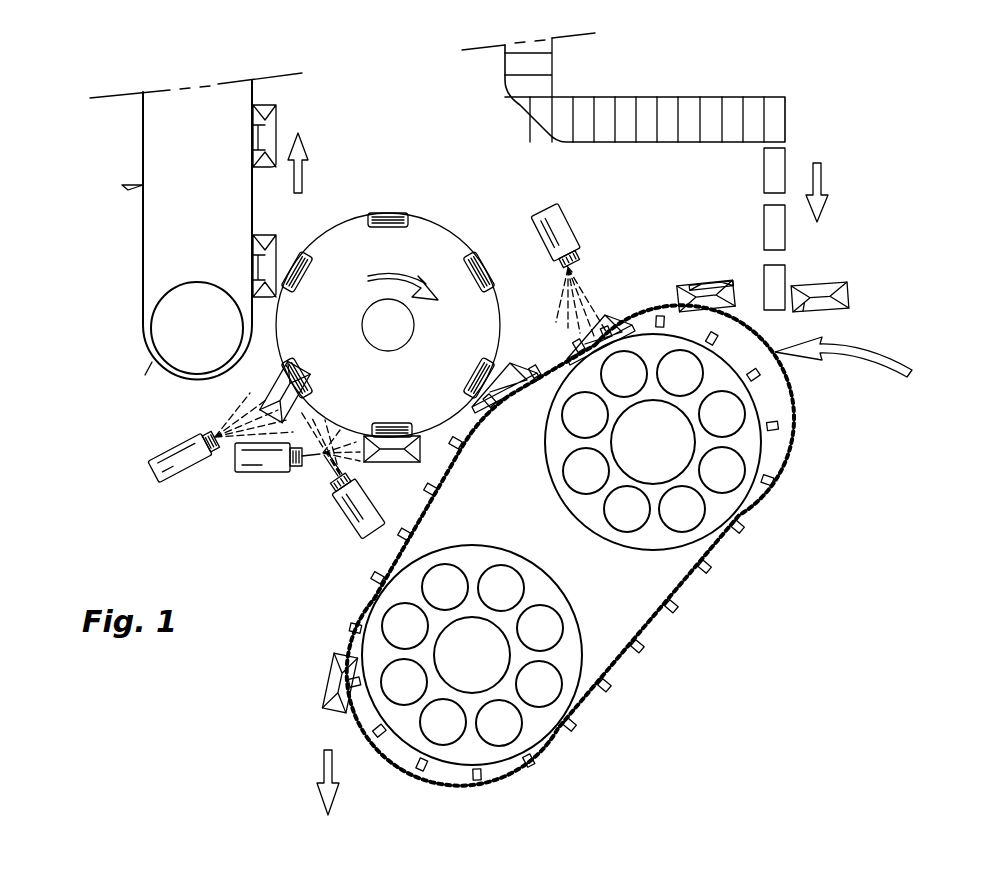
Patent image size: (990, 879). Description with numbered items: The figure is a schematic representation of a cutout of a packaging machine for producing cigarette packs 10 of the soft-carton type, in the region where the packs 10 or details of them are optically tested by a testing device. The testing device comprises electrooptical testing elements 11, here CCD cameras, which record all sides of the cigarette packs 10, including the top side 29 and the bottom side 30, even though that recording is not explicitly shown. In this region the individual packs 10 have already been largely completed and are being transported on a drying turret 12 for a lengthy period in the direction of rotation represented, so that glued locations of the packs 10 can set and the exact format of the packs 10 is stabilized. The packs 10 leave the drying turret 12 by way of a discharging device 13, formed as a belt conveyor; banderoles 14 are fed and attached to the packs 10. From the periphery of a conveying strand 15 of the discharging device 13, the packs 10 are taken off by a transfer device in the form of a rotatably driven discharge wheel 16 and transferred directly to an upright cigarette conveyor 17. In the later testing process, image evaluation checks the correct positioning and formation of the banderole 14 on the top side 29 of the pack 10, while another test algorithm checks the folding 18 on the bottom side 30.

The cigarette pack 10 is at (815, 300).
The electrooptical testing element 11 is at (560, 226).
The drying turret 12 is at (871, 449).
The discharging device 13 is at (668, 665).
The banderole 14 is at (813, 137).
The conveying strand 15 is at (753, 494).
The discharge wheel 16 is at (410, 230).
The cigarette conveyor 17 is at (126, 258).
The folding 18 is at (568, 333).
The top side 29 is at (700, 290).
The bottom side 30 is at (608, 320).